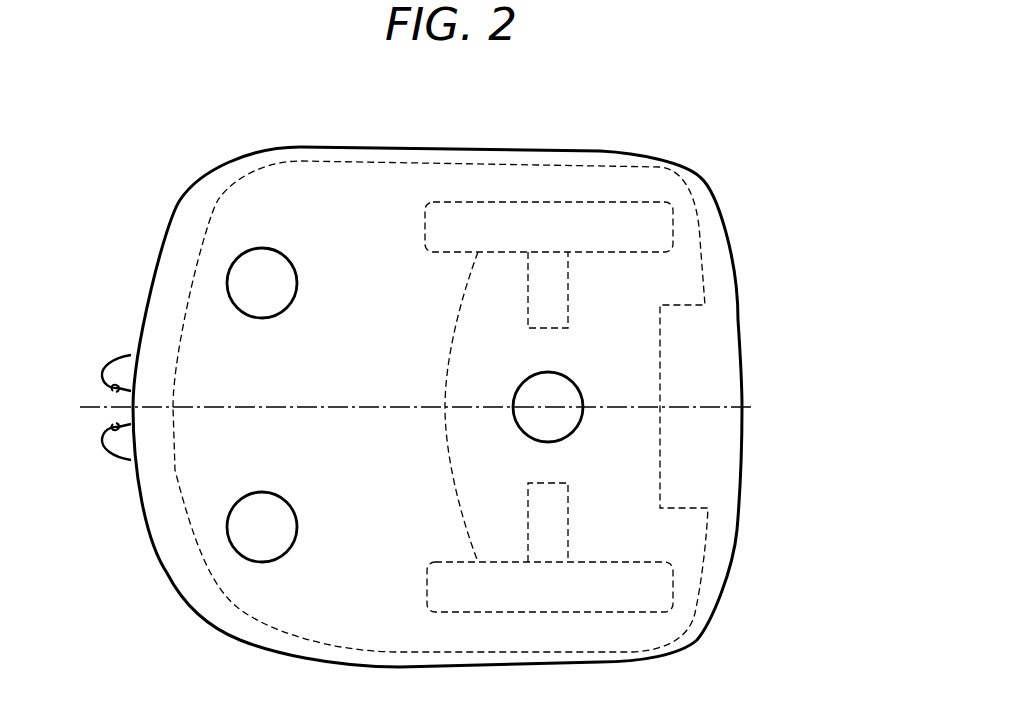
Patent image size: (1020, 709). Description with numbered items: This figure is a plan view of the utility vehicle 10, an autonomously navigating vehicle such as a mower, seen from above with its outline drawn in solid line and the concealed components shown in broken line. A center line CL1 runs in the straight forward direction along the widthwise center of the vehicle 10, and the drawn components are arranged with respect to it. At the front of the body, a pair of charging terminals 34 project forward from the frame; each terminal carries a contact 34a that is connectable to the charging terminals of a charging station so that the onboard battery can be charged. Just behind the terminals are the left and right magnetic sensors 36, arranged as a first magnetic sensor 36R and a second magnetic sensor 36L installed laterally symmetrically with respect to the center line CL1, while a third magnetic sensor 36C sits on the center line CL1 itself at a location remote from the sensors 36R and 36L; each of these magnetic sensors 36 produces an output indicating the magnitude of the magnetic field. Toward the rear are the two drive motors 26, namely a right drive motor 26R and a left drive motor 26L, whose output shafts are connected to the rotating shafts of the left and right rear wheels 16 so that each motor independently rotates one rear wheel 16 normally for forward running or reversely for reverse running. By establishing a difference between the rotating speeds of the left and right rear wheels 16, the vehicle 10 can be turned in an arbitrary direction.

The utility vehicle 10 is at (672, 150).
The rear wheels 16 is at (456, 407).
The drive motors 26 is at (638, 407).
The right drive motor 26R is at (568, 277).
The left drive motor 26L is at (570, 508).
The charging terminals 34 is at (103, 373).
The contacts 34a is at (110, 427).
The magnetic sensors 36 is at (248, 405).
The first magnetic sensor 36R is at (262, 318).
The second magnetic sensor 36L is at (262, 492).
The third magnetic sensor 36C is at (582, 388).
The center line CL1 is at (436, 407).